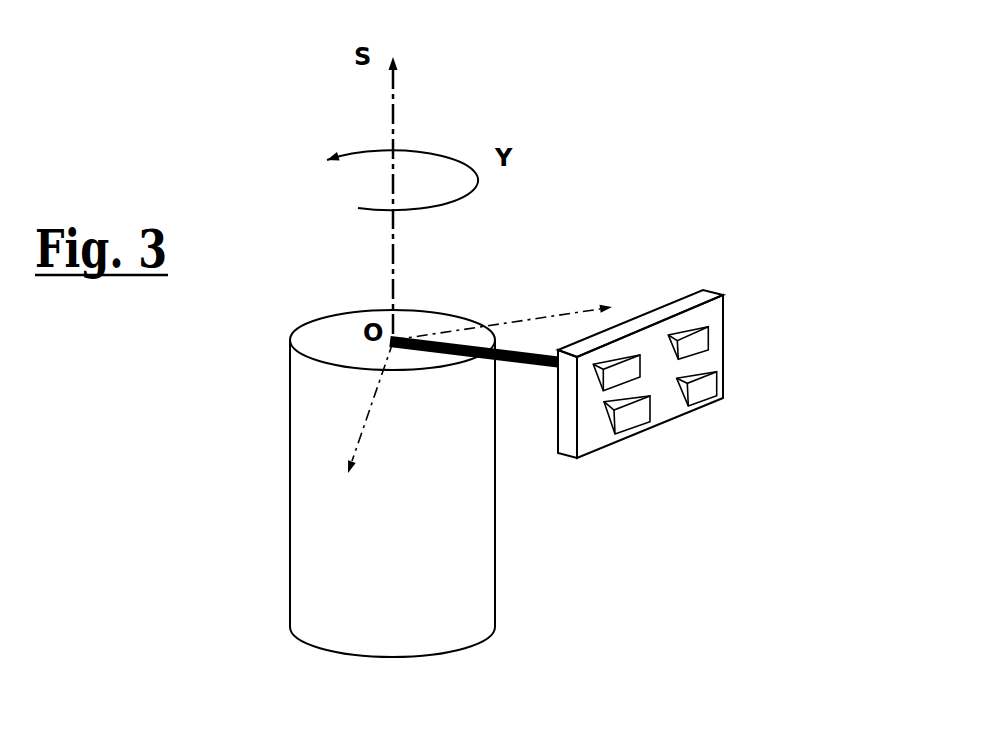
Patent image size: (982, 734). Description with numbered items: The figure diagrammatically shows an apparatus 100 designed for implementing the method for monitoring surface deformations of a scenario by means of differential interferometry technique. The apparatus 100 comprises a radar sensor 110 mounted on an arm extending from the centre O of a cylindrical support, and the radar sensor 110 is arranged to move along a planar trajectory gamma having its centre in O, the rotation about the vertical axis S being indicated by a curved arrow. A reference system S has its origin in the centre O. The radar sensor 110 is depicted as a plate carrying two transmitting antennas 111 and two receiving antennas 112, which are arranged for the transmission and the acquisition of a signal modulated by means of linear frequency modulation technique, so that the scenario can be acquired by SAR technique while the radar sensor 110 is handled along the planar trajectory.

The apparatus 100 is at (640, 92).
The radar sensor 110 is at (736, 308).
The transmitting antenna 111 is at (635, 417).
The receiving antenna 112 is at (700, 392).